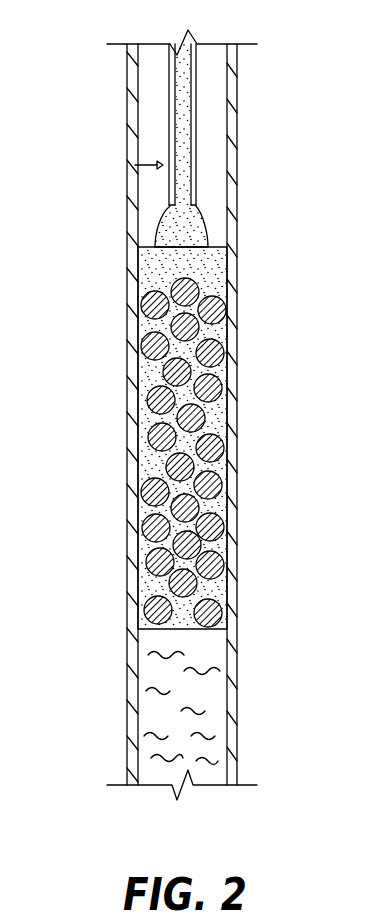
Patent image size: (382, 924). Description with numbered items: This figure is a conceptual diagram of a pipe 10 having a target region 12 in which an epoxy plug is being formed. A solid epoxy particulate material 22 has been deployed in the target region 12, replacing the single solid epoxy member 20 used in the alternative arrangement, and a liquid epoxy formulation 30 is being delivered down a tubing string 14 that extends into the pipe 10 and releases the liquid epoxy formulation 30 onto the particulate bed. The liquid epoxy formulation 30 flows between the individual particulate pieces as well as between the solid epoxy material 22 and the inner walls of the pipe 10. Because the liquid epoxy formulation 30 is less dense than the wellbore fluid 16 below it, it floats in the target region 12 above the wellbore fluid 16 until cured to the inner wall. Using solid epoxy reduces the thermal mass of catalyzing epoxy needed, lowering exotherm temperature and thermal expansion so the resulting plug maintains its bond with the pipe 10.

The pipe 10 is at (233, 147).
The target region 12 is at (117, 247).
The tubing string 14 is at (168, 133).
The wellbore fluid 16 is at (210, 684).
The solid epoxy member 20 is at (225, 621).
The solid epoxy particulate material 22 is at (225, 308).
The liquid epoxy formulation 30 is at (137, 265).